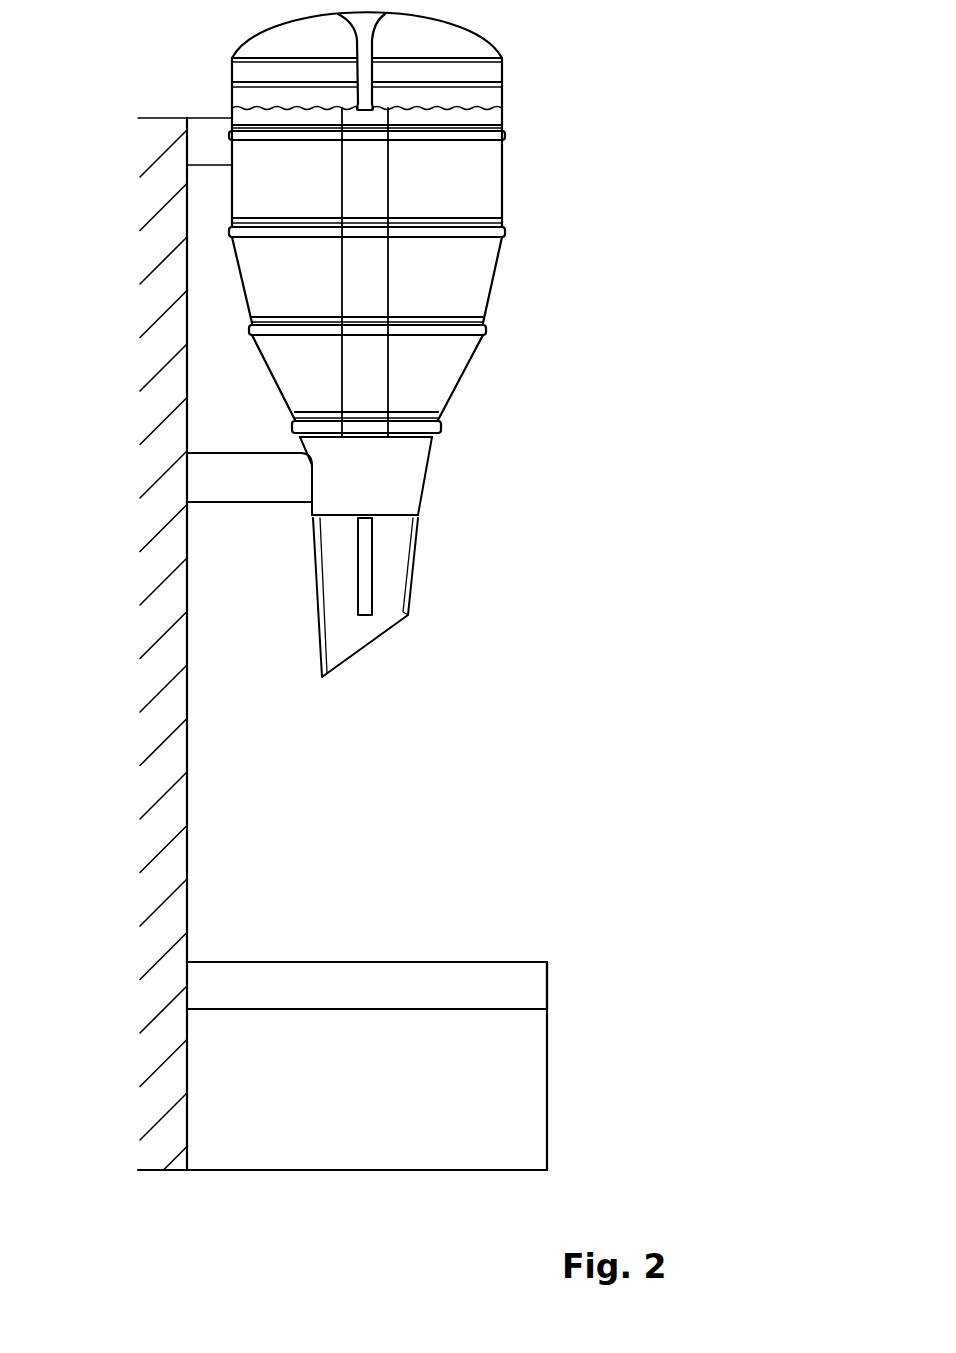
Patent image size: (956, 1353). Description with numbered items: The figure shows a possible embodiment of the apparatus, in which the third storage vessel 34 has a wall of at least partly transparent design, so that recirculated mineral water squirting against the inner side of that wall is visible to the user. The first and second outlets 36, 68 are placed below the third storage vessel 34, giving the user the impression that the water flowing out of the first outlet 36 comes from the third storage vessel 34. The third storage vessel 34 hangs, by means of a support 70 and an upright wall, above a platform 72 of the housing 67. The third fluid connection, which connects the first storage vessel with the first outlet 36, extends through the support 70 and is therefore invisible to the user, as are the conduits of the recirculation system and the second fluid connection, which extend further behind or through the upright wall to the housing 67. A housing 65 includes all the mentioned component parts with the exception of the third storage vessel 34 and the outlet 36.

The third storage vessel 34 is at (500, 182).
The first outlet 36 is at (452, 557).
The second outlet 68 is at (423, 478).
The support 70 is at (245, 452).
The platform 72 is at (498, 962).
The housing 67 is at (547, 1059).
The housing 65 is at (167, 1077).